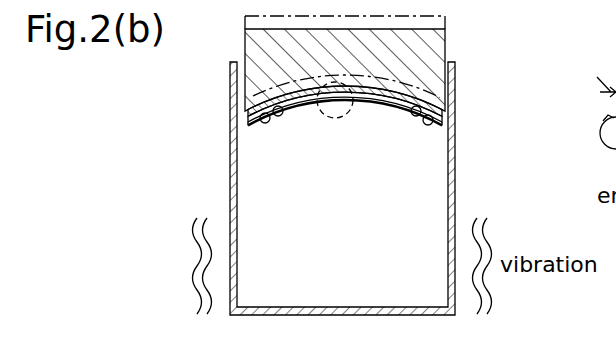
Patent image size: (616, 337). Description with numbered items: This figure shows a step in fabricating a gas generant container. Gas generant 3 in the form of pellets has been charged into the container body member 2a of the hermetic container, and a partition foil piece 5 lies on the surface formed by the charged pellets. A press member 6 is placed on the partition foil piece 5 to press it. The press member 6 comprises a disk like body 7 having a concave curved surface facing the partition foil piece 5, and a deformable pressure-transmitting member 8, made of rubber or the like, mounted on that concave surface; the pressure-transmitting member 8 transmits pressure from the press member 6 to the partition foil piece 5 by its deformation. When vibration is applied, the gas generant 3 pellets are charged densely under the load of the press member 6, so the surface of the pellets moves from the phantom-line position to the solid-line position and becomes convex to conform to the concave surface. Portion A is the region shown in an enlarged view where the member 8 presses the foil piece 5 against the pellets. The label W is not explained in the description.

The container body member 2a is at (455, 195).
The gas generant 3 is at (437, 107).
The partition foil piece 5 is at (451, 126).
The press member 6 is at (397, 66).
The disk like body 7 is at (441, 75).
The deformable pressure-transmitting member 8 is at (433, 101).
The wafer W is at (346, 66).
The portion A is at (354, 105).